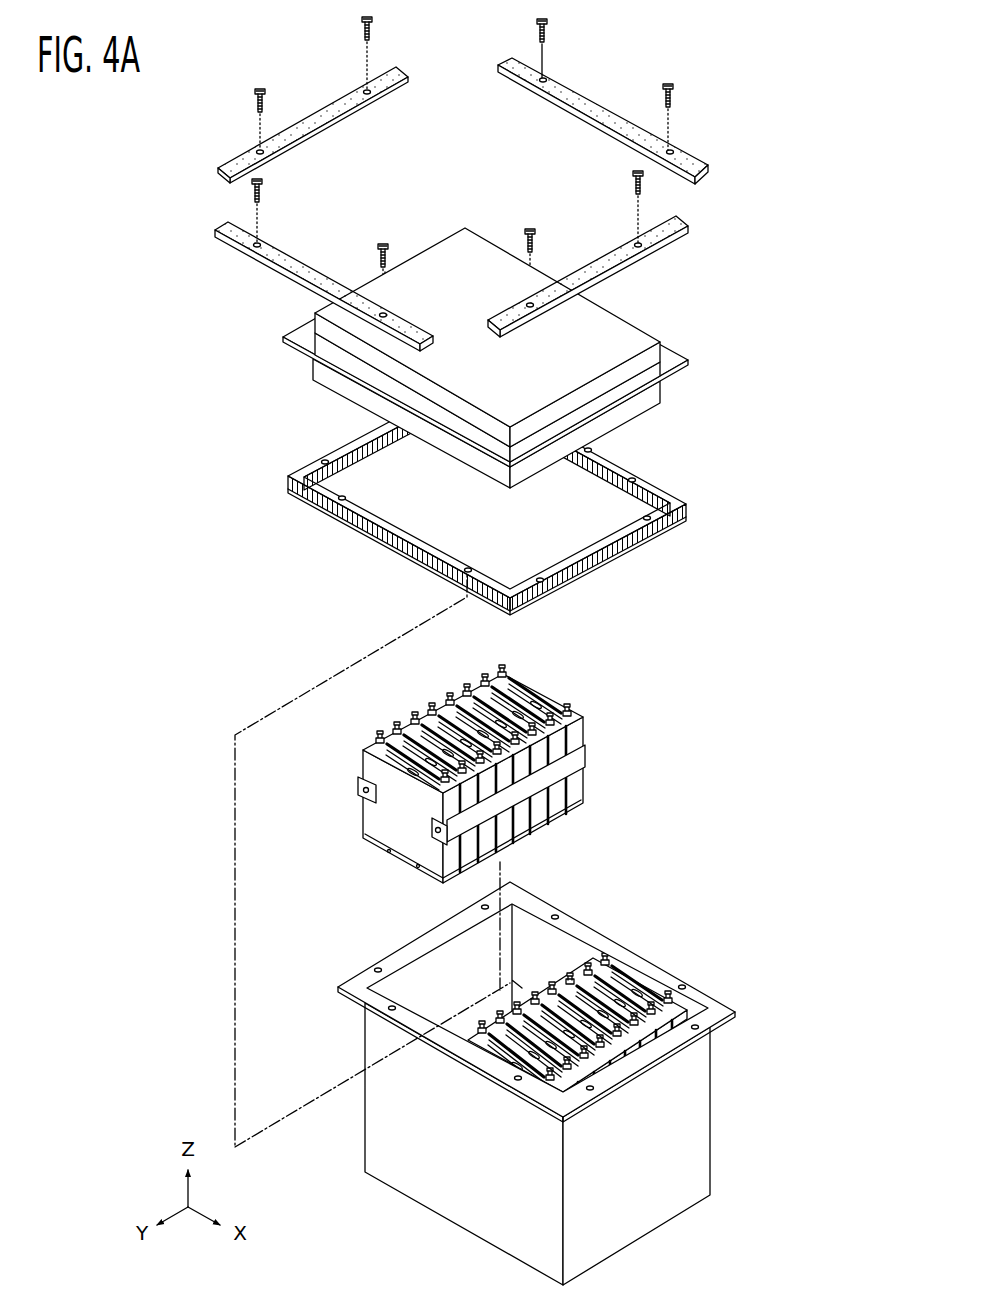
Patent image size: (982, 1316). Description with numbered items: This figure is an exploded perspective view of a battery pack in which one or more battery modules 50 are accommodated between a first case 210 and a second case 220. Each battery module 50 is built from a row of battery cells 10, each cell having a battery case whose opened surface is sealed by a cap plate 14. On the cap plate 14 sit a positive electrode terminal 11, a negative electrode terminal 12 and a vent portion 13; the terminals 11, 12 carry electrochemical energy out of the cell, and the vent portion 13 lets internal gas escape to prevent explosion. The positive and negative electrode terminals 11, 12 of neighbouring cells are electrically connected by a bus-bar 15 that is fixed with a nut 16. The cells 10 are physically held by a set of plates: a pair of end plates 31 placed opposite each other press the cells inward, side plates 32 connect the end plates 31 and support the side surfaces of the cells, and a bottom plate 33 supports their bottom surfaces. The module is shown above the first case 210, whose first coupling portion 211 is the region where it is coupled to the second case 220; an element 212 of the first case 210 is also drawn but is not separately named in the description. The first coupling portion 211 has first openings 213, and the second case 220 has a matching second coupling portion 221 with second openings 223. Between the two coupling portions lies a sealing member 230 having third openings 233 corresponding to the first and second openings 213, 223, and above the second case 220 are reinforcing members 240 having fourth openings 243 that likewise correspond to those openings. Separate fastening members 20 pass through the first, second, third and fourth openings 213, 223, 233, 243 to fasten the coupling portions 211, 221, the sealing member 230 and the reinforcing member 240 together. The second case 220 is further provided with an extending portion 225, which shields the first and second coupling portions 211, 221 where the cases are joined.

The battery cell 10 is at (475, 744).
The positive electrode terminal 11 is at (500, 668).
The negative electrode terminal 12 is at (563, 704).
The vent portion 13 is at (536, 692).
The cap plate 14 is at (515, 687).
The bus-bar 15 is at (387, 736).
The nut 16 is at (378, 737).
The fastening member 20 is at (668, 80).
The end plate 31 is at (588, 780).
The side plate 32 is at (355, 788).
The bottom plate 33 is at (462, 875).
The battery module 50 is at (472, 738).
The first case 210 is at (527, 1083).
The first coupling portion 211 is at (564, 1010).
The housing body 212 is at (422, 990).
The first opening 213 is at (592, 1090).
The second case 220 is at (461, 245).
The second coupling portion 221 is at (497, 351).
The second opening 223 is at (537, 440).
The extending portion 225 is at (360, 394).
The sealing member 230 is at (487, 498).
The third opening 233 is at (466, 567).
The reinforcing member 240 is at (302, 184).
The fourth opening 243 is at (383, 313).